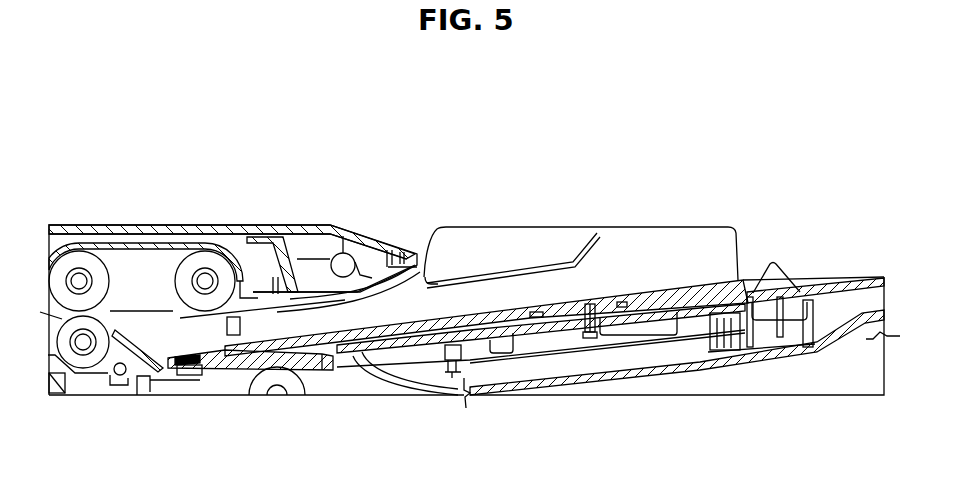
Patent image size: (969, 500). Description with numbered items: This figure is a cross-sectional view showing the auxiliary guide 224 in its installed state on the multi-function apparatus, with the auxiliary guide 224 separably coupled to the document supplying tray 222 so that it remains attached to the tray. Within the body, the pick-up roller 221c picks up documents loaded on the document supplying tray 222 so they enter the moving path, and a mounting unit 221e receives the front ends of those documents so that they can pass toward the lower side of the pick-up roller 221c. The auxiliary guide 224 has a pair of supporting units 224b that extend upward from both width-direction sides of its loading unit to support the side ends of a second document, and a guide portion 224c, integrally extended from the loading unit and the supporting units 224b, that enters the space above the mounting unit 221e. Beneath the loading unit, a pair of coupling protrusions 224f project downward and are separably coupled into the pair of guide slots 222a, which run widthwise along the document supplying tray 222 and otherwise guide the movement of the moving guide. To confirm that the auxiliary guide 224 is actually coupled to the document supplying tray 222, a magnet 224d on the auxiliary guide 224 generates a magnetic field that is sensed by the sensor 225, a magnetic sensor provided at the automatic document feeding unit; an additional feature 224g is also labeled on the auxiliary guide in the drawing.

The pick-up roller 221c is at (199, 262).
The mounting unit 221e is at (275, 341).
The document supplying tray 222 is at (833, 280).
The guide slots 222a is at (700, 345).
The auxiliary guide 224 is at (681, 220).
The supporting units 224b is at (622, 240).
The guide portion 224c is at (303, 322).
The magnet 224d is at (180, 353).
The coupling protrusions 224f is at (583, 338).
The hook 224g is at (583, 310).
The sensor 225 is at (188, 375).